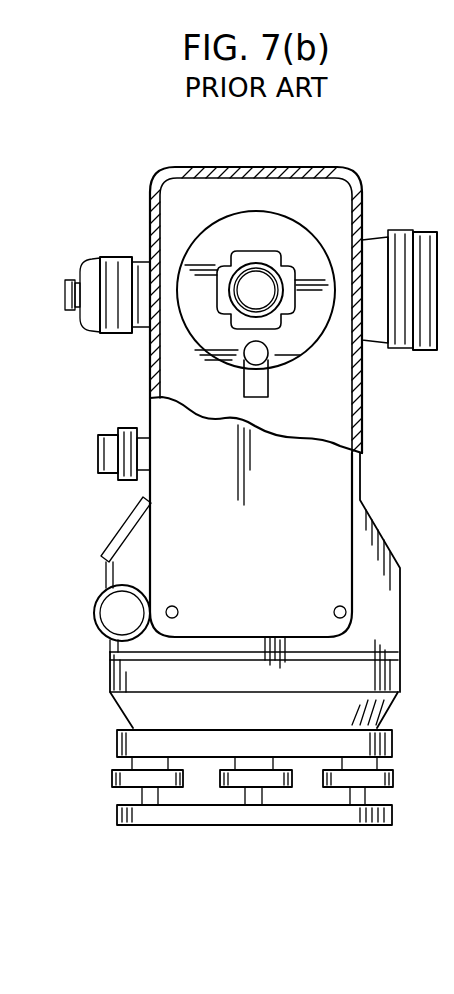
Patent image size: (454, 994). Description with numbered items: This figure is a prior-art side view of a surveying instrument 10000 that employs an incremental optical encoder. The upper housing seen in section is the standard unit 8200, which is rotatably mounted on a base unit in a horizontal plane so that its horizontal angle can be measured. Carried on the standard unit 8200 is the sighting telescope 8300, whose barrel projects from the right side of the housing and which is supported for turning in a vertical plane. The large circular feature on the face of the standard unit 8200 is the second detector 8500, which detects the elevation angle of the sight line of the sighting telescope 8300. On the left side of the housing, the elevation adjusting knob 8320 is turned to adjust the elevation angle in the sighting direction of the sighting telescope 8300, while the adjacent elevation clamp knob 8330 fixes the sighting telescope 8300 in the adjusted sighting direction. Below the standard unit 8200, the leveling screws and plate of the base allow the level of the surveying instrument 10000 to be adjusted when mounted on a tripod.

The standard unit 8200 is at (190, 200).
The second detector 8500 is at (288, 232).
The sighting telescope 8300 is at (403, 240).
The elevation clamp knob 8330 is at (127, 428).
The elevation adjusting knob 8320 is at (98, 455).
The surveying instrument 10000 is at (402, 792).